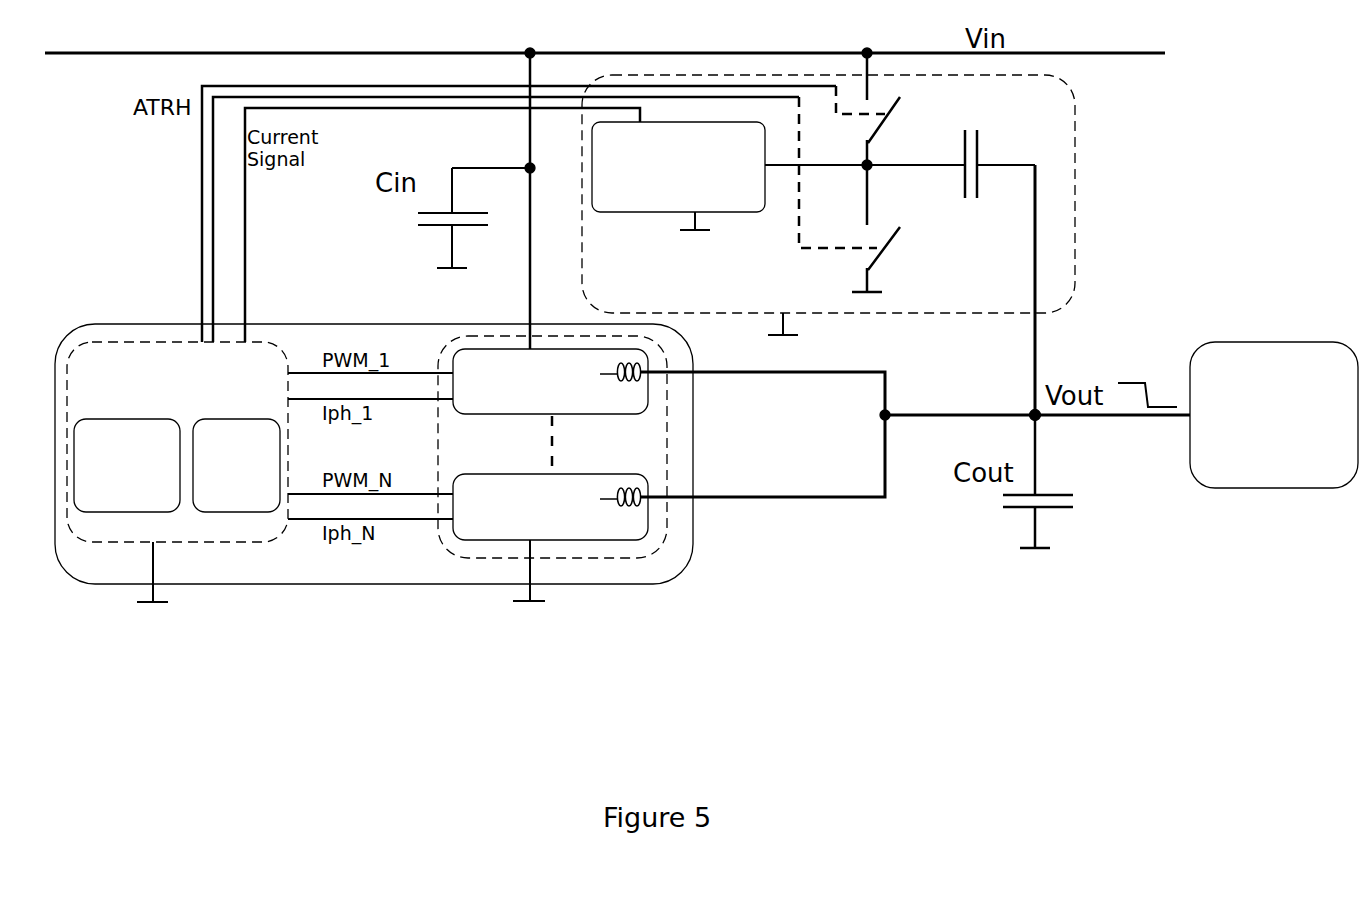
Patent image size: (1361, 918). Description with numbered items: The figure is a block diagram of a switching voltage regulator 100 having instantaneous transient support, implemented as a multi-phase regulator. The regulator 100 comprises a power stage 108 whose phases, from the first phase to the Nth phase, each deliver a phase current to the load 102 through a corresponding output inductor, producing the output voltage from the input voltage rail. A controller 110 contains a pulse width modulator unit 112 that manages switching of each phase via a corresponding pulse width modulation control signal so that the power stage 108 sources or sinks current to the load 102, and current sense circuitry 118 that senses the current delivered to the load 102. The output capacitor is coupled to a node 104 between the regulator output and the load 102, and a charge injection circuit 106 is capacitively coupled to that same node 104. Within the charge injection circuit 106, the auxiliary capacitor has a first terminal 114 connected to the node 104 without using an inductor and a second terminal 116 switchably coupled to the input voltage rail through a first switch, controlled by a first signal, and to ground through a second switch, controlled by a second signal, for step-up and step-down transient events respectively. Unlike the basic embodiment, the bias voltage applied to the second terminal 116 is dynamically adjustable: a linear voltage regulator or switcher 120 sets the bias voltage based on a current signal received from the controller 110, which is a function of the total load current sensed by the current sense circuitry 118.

The voltage regulator 100 is at (375, 325).
The load 102 is at (1274, 415).
The node 104 is at (1025, 407).
The charge injection circuit 106 is at (880, 234).
The power stage 108 is at (605, 558).
The controller 110 is at (177, 472).
The pulse width modulator unit 112 is at (236, 465).
The first terminal 114 is at (981, 186).
The second terminal 116 is at (960, 186).
The current sense circuitry 118 is at (127, 465).
The linear voltage regulator or switcher 120 is at (678, 176).